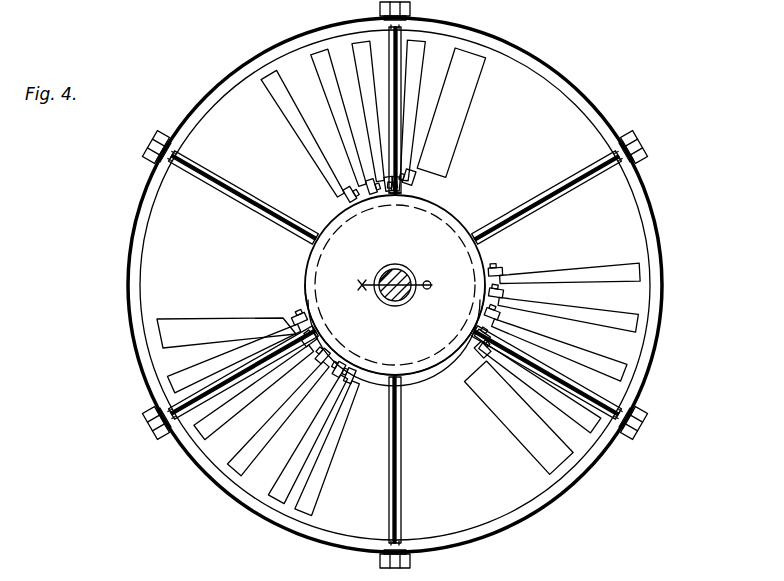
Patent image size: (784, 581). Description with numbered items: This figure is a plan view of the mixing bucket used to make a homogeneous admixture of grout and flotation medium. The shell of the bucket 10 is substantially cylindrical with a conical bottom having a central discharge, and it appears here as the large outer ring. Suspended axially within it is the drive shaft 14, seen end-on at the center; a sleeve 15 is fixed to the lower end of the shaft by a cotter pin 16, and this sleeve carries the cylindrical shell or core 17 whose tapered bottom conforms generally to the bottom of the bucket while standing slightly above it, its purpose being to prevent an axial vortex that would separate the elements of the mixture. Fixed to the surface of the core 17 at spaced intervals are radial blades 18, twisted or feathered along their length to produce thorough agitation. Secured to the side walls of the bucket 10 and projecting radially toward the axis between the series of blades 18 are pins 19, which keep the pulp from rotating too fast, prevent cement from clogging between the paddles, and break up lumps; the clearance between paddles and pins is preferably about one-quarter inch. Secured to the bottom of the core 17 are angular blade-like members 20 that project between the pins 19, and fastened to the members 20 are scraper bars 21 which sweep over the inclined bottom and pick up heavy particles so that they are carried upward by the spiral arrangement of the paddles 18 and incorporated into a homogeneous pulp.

The bucket 10 is at (665, 248).
The drive shaft 14 is at (395, 285).
The sleeve 15 is at (406, 308).
The cotter pin 16 is at (429, 283).
The core 17 is at (447, 226).
The radial blades 18 is at (363, 48).
The pins 19 is at (515, 182).
The angular blade-like members 20 is at (447, 173).
The scraper bars 21 is at (460, 132).